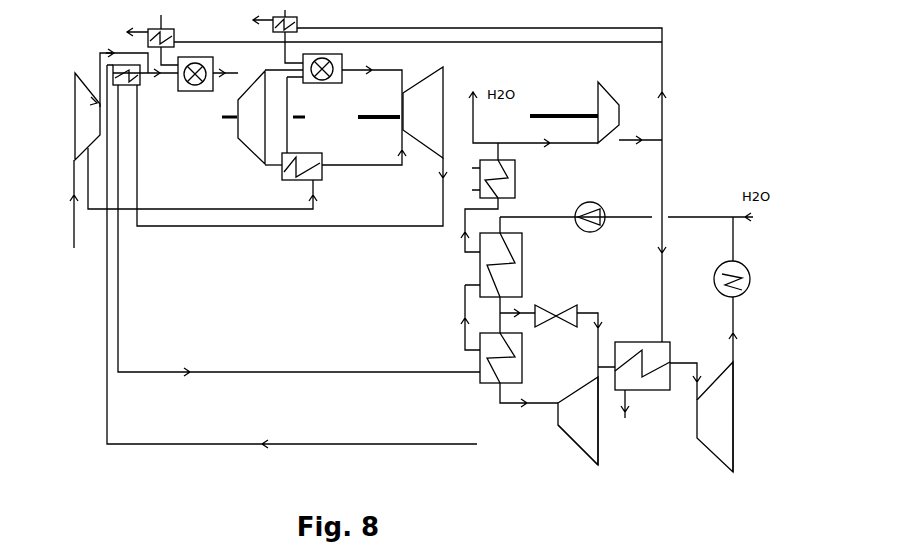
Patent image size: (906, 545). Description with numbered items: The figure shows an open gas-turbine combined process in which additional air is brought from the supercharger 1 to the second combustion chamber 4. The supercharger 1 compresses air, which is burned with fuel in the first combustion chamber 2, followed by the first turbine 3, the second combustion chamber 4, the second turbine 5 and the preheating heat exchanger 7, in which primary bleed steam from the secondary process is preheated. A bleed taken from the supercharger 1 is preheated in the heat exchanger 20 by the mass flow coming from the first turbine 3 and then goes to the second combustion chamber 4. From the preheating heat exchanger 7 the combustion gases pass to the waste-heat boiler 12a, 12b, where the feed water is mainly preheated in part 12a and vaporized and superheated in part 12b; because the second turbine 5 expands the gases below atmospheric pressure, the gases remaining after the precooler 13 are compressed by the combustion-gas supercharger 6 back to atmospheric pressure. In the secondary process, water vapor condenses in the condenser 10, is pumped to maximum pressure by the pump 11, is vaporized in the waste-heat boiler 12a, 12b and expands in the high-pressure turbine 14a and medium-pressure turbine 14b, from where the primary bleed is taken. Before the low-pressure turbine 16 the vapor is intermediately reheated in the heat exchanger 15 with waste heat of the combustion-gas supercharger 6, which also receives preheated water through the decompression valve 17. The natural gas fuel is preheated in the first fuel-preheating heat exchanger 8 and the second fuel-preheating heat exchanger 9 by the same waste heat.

The supercharger 1 is at (75, 103).
The first combustion chamber 2 is at (208, 93).
The first turbine 3 is at (240, 143).
The second combustion chamber 4 is at (333, 88).
The second turbine 5 is at (443, 115).
The combustion-gas supercharger 6 is at (613, 100).
The preheating heat exchanger 7 is at (140, 85).
The first fuel-preheating heat exchanger 8 is at (147, 43).
The second fuel-preheating heat exchanger 9 is at (297, 28).
The condenser 10 is at (738, 263).
The pump 11 is at (603, 198).
The waste-heat boiler 12a is at (480, 250).
The waste-heat boiler 12b is at (480, 367).
The precooler 13 is at (513, 179).
The high-pressure turbine 14a is at (562, 427).
The medium-pressure turbine 14b is at (578, 450).
The heat exchanger 15 is at (643, 342).
The low-pressure turbine 16 is at (722, 460).
The decompression valve 17 is at (573, 303).
The heat exchanger 20 is at (280, 180).